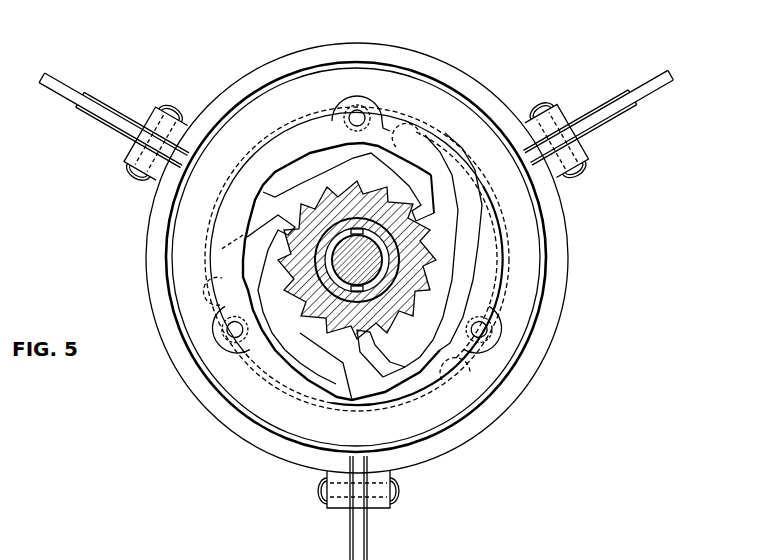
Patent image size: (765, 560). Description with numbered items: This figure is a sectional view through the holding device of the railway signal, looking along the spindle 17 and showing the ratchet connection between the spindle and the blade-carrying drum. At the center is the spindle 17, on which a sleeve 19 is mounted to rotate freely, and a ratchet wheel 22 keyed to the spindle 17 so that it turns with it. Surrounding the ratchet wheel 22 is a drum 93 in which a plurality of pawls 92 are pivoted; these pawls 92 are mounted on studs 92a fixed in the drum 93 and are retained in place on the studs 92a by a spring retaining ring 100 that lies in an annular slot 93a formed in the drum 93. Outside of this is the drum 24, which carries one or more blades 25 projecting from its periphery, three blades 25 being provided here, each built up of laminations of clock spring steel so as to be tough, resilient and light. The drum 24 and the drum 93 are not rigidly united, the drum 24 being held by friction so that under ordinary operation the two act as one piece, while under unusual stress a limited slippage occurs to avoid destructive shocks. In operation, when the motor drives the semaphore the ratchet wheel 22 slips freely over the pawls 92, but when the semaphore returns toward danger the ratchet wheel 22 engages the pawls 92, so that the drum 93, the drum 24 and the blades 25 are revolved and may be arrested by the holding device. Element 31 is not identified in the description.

The spindle 17 is at (343, 272).
The sleeve 19 is at (322, 243).
The ratchet wheel 22 is at (357, 260).
The drum 24 is at (463, 84).
The blades 25 is at (362, 541).
The plate 31 is at (463, 169).
The pawls 92 is at (449, 274).
The studs 92a is at (366, 110).
The drum 93 is at (548, 263).
The annular slot 93a is at (445, 383).
The spring retaining ring 100 is at (505, 303).